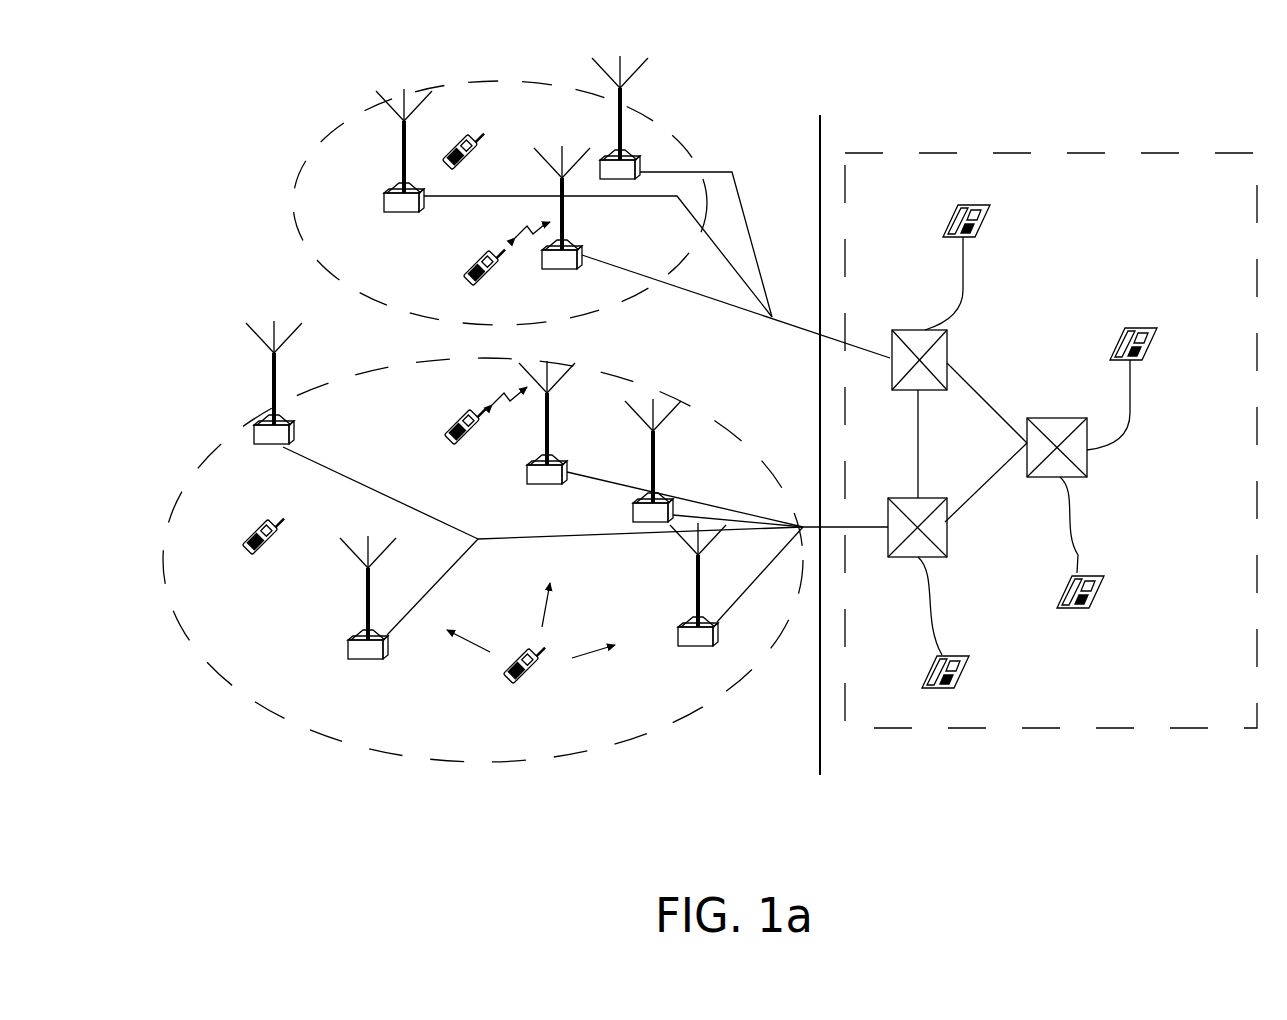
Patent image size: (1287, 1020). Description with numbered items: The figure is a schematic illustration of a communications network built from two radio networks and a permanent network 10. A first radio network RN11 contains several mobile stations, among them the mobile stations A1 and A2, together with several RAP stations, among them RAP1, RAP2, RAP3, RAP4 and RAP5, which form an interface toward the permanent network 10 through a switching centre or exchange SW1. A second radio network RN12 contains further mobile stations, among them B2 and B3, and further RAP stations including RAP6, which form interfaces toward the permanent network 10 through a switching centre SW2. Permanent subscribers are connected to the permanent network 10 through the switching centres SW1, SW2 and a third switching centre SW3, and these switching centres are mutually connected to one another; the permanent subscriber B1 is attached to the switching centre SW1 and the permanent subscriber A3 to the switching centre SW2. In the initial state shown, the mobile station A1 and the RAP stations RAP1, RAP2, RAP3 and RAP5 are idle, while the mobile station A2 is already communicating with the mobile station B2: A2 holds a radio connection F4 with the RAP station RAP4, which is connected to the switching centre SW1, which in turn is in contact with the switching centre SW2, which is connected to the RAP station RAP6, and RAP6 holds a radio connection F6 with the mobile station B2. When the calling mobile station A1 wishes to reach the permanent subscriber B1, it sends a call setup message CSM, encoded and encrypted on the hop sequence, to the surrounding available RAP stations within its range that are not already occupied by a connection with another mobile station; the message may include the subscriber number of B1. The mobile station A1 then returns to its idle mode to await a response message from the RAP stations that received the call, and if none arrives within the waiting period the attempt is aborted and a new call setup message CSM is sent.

The permanent network 10 is at (1110, 148).
The first radio network RN11 is at (393, 750).
The second radio network RN12 is at (513, 85).
The RAP station RAP1 is at (703, 648).
The RAP station RAP2 is at (366, 617).
The RAP station RAP3 is at (651, 470).
The RAP station RAP4 is at (527, 478).
The RAP station RAP5 is at (296, 432).
The RAP station RAP6 is at (566, 270).
The switching centre SW1 is at (945, 486).
The switching centre SW2 is at (928, 390).
The switching centre SW3 is at (1082, 410).
The mobile station A1 is at (498, 633).
The mobile station A2 is at (450, 422).
The permanent subscriber A3 is at (985, 212).
The permanent subscriber B1 is at (962, 664).
The mobile station B2 is at (474, 260).
The mobile station B3 is at (470, 156).
The radio connection F4 is at (502, 385).
The radio connection F6 is at (526, 220).
The call setup message CSM is at (604, 637).